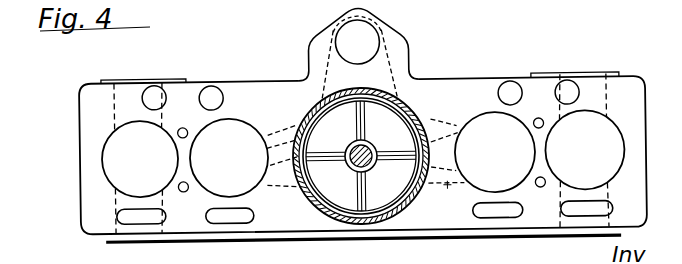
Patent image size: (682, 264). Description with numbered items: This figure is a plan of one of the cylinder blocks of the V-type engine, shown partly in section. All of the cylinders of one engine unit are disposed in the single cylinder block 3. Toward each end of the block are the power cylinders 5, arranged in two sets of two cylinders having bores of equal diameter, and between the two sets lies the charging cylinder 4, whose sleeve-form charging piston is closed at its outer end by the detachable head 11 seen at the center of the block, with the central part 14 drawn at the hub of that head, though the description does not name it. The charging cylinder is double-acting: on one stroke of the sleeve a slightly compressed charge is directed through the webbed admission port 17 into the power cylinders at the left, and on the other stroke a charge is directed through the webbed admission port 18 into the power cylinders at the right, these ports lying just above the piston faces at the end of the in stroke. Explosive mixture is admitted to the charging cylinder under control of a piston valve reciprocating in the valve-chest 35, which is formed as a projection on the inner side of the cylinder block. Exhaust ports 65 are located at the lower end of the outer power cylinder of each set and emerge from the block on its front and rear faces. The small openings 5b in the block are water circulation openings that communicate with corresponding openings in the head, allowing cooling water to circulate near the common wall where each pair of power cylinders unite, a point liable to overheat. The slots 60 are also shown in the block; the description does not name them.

The cylinder block 3 is at (90, 104).
The charging cylinder 4 is at (432, 108).
The power cylinders 5 is at (363, 154).
The openings in the cylinder block 5b is at (189, 131).
The detachable head 11 is at (420, 118).
The hub / shaft 14 is at (354, 170).
The webbed admission port 17 is at (280, 127).
The webbed admission port 18 is at (447, 192).
The valve-chest 35 is at (395, 38).
The apertures / slots 60 is at (213, 94).
The exhaust ports 65 is at (133, 92).